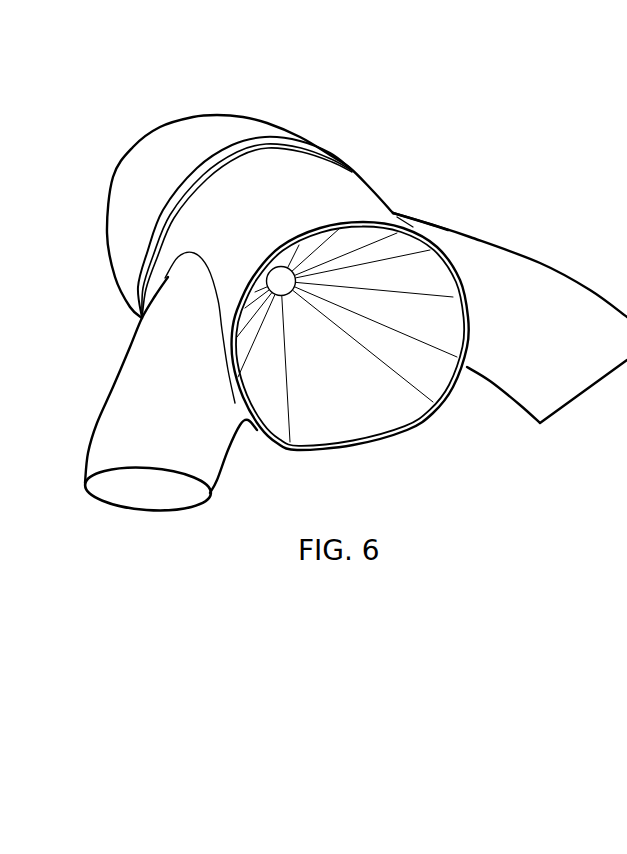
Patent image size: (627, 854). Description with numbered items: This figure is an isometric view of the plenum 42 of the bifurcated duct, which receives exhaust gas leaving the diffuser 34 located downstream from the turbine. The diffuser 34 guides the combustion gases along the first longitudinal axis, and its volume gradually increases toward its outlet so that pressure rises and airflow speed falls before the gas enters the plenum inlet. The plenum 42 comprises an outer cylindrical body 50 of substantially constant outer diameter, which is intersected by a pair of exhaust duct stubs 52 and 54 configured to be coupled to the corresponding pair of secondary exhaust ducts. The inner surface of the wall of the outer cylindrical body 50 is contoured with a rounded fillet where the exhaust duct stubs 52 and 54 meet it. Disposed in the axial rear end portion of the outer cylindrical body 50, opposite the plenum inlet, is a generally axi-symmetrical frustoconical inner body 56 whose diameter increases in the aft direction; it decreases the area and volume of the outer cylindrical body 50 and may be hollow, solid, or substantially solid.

The diffuser 34 is at (181, 121).
The plenum 42 is at (444, 215).
The outer cylindrical body 50 is at (350, 172).
The exhaust duct stub 52 is at (543, 261).
The exhaust duct stub 54 is at (94, 447).
The inner body 56 is at (395, 414).